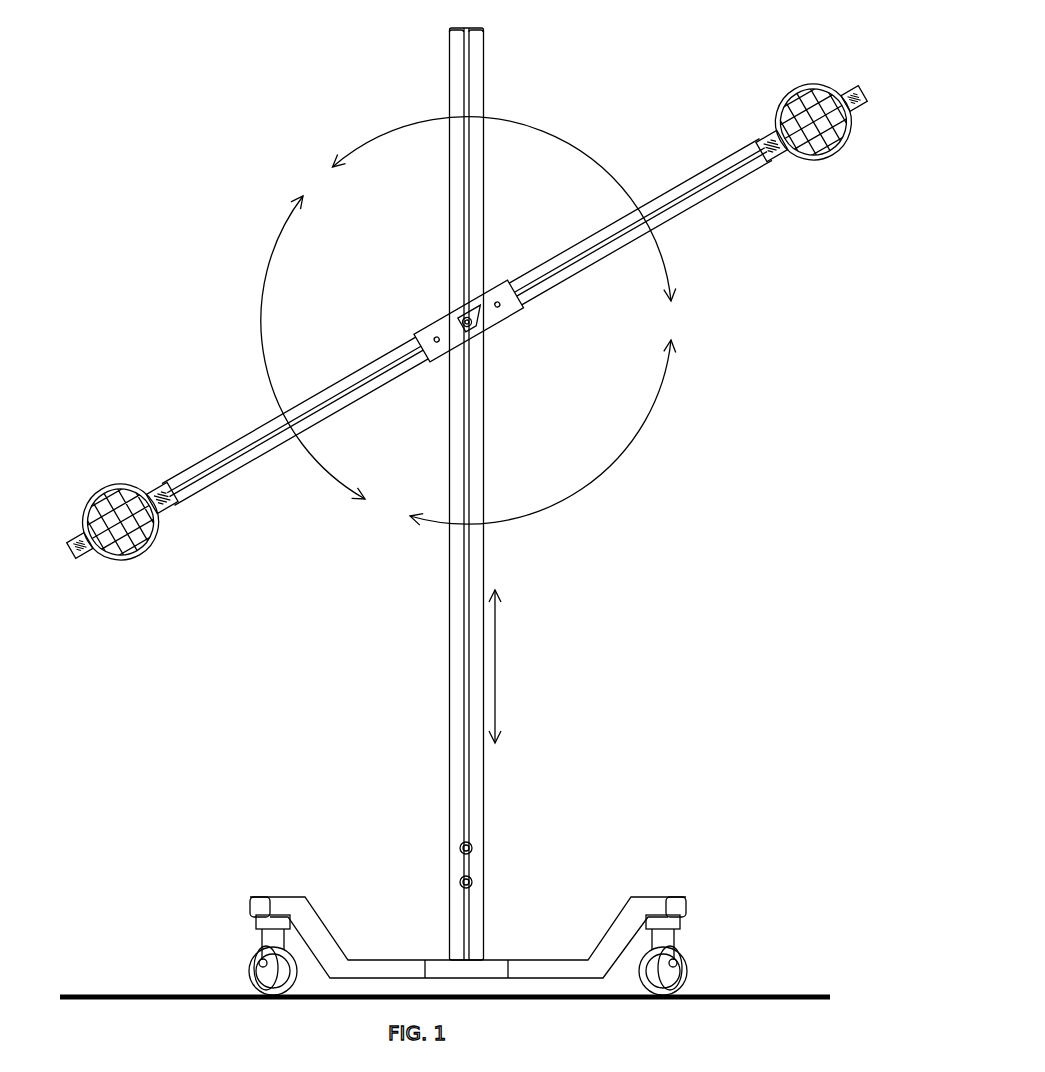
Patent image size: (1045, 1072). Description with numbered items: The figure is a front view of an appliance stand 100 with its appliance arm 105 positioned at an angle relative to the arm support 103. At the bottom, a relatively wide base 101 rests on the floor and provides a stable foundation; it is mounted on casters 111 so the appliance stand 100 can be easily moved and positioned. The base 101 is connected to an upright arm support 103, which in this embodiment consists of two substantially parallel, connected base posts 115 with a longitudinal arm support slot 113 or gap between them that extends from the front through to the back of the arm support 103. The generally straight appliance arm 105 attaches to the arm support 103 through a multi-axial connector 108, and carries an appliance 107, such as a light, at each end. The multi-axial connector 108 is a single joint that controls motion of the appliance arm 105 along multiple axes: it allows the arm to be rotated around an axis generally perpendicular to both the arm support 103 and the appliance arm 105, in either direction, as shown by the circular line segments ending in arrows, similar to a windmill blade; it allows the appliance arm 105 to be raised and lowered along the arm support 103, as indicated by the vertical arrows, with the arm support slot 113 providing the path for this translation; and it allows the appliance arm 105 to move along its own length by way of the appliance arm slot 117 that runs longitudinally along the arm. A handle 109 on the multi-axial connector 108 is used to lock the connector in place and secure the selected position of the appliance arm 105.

The appliance stand 100 is at (232, 150).
The base 101 is at (630, 897).
The arm support 103 is at (445, 485).
The appliance arm 105 is at (228, 437).
The appliance 107 is at (803, 150).
The multi-axial connector 108 is at (433, 312).
The handle 109 is at (470, 325).
The casters 111 is at (255, 982).
The arm support slot 113 is at (463, 775).
The base posts 115 is at (449, 75).
The appliance arm slot 117 is at (668, 240).